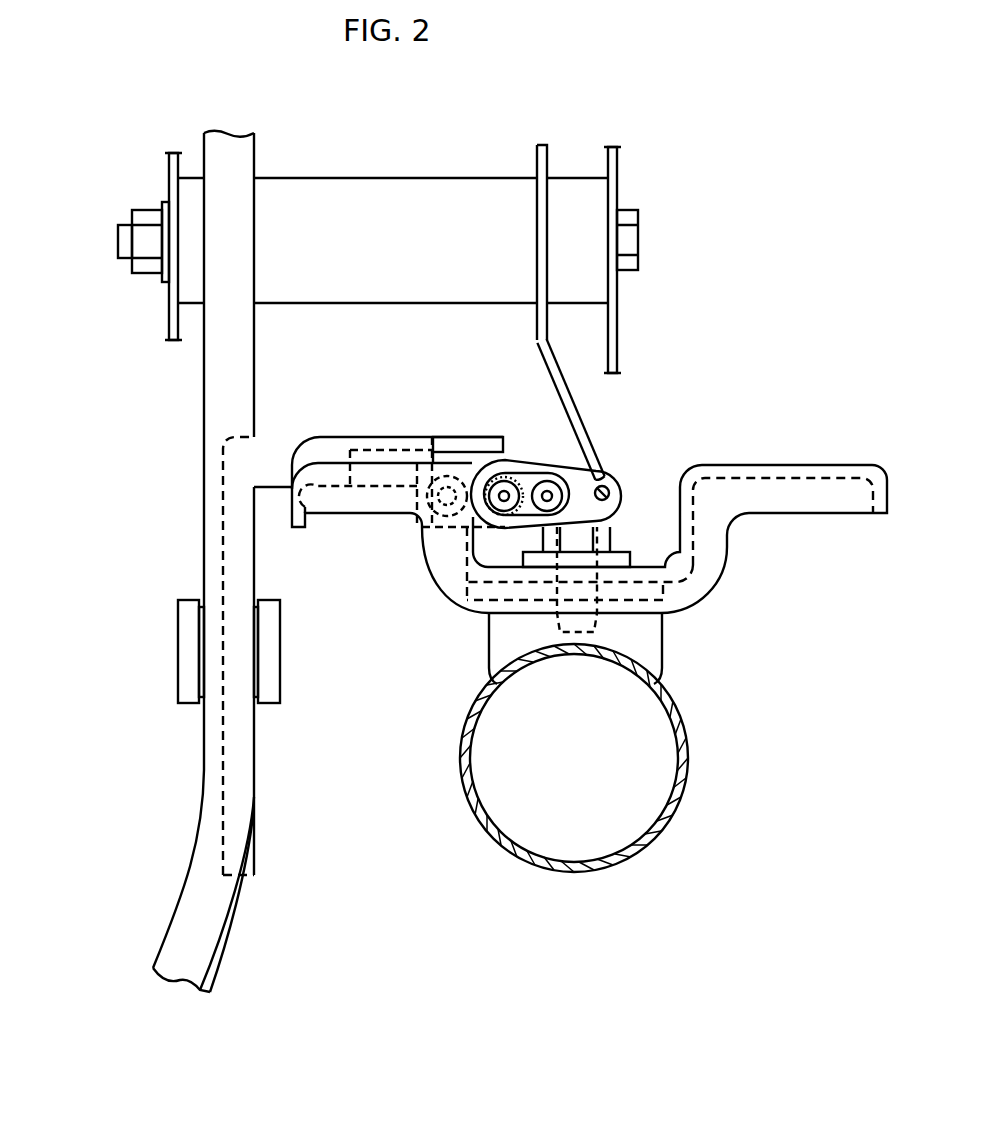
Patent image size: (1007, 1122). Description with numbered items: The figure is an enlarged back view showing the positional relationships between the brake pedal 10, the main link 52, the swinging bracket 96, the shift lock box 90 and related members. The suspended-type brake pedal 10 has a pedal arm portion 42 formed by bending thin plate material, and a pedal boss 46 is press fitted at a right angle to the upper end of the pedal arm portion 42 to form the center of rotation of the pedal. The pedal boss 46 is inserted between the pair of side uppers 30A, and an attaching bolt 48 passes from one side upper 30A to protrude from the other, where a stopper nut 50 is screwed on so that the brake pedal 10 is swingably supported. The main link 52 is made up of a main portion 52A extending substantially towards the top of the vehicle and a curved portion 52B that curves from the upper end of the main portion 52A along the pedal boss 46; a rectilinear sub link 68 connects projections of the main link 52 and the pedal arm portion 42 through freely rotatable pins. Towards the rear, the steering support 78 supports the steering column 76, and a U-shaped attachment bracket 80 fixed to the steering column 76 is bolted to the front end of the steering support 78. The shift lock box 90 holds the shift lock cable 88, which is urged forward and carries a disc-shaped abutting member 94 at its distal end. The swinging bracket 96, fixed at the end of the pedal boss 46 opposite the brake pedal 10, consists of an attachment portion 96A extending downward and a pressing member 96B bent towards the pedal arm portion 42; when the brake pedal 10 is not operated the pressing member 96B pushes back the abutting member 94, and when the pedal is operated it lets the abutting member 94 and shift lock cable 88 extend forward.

The brake pedal 10 is at (165, 930).
The side uppers 30A is at (169, 162).
The pedal arm portion 42 is at (204, 400).
The pedal boss 46 is at (407, 192).
The attaching bolt 48 is at (638, 240).
The stopper nut 50 is at (150, 262).
The main link 52 is at (283, 437).
The main portion 52A is at (223, 770).
The curved portion 52B is at (275, 477).
The sub link 68 is at (178, 655).
The steering column 76 is at (688, 745).
The steering support 78 is at (797, 465).
The attachment bracket 80 is at (663, 645).
The shift lock cable 88 is at (503, 498).
The shift lock box 90 is at (550, 460).
The abutting member 94 is at (540, 530).
The swinging bracket 96 is at (528, 276).
The attachment portion 96A is at (537, 205).
The pressing member 96B is at (525, 430).